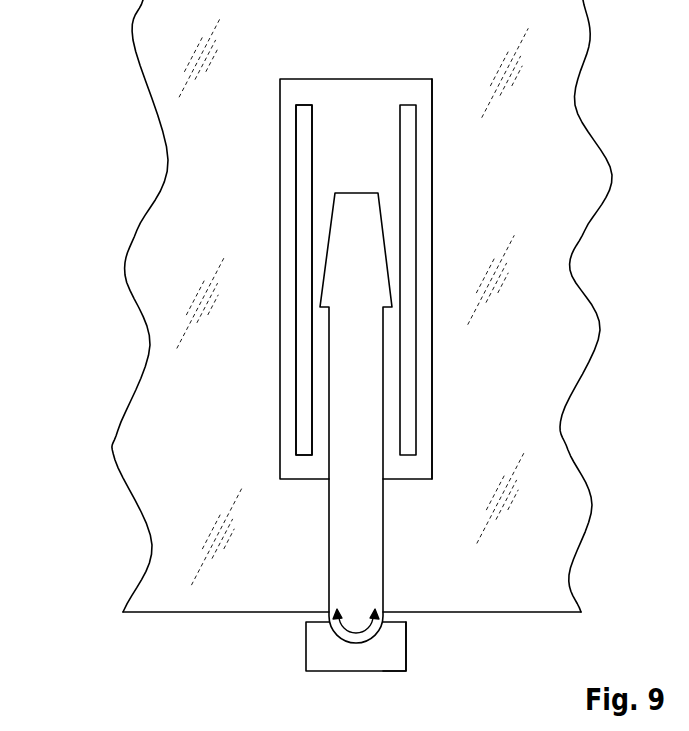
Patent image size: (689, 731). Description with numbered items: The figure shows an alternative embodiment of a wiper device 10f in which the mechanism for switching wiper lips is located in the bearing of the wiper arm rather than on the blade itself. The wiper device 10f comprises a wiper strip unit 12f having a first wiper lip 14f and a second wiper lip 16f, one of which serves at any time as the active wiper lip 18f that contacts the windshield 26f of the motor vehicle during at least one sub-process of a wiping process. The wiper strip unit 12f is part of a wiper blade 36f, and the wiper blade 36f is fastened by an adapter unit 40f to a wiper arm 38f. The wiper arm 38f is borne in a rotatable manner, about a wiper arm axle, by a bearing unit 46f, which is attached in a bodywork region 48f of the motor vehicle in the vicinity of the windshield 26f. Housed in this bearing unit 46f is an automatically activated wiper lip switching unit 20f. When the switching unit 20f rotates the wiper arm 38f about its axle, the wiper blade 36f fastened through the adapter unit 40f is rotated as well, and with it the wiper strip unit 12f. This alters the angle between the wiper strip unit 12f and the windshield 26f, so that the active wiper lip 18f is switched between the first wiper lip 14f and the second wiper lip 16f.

The wiper device 10f is at (104, 151).
The wiper strip unit 12f is at (280, 188).
The first wiper lip 14f is at (302, 228).
The wiper lip 18f is at (304, 280).
The second wiper lip 16f is at (407, 161).
The automatically activated wiper lip switching unit 20f is at (281, 667).
The windshield 26f is at (580, 333).
The wiper blade 36f is at (423, 243).
The wiper arm 38f is at (357, 637).
The adapter unit 40f is at (355, 176).
The bearing unit 46f is at (385, 655).
The bodywork region 48f is at (466, 648).